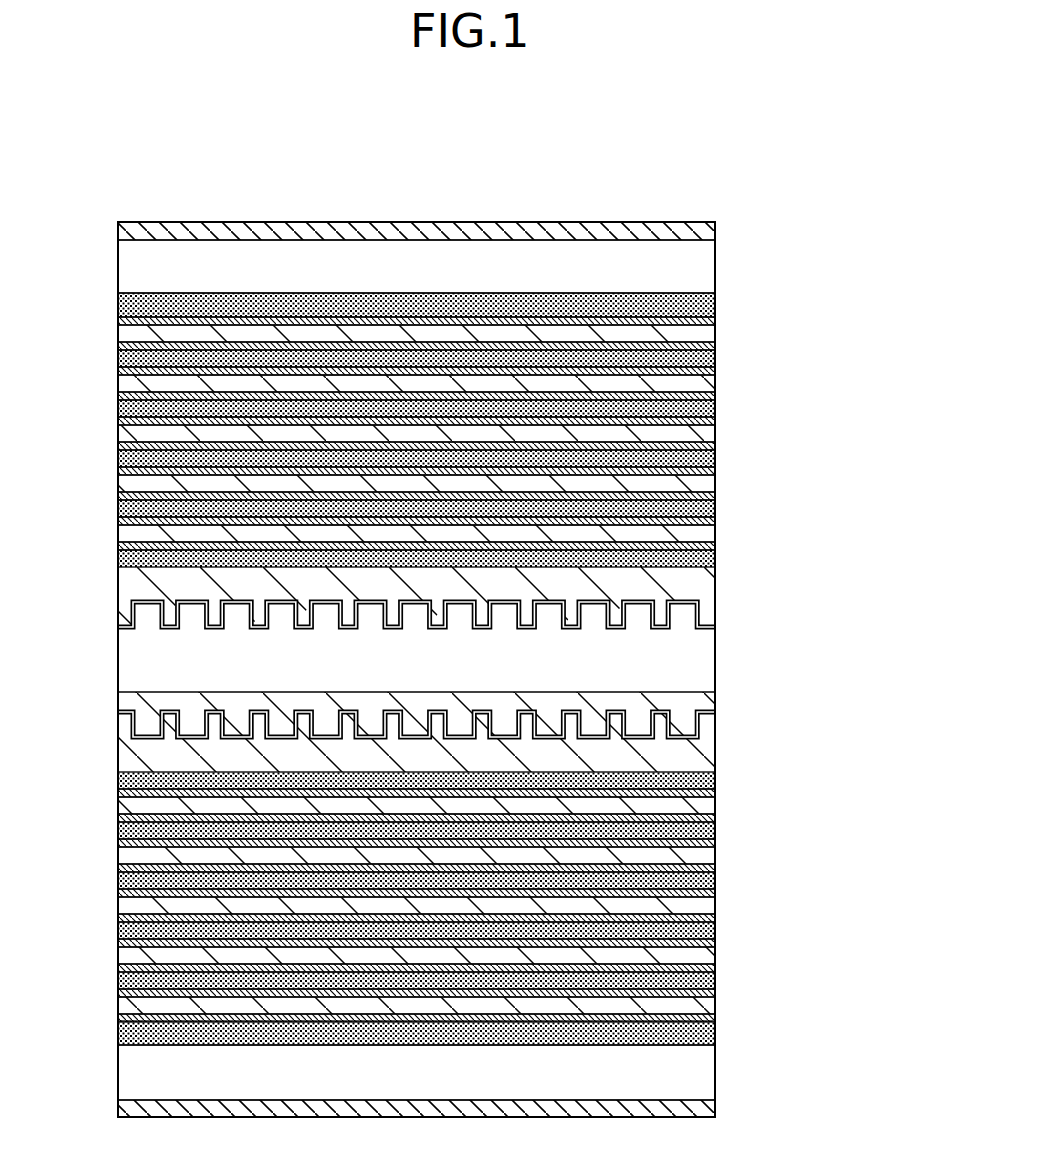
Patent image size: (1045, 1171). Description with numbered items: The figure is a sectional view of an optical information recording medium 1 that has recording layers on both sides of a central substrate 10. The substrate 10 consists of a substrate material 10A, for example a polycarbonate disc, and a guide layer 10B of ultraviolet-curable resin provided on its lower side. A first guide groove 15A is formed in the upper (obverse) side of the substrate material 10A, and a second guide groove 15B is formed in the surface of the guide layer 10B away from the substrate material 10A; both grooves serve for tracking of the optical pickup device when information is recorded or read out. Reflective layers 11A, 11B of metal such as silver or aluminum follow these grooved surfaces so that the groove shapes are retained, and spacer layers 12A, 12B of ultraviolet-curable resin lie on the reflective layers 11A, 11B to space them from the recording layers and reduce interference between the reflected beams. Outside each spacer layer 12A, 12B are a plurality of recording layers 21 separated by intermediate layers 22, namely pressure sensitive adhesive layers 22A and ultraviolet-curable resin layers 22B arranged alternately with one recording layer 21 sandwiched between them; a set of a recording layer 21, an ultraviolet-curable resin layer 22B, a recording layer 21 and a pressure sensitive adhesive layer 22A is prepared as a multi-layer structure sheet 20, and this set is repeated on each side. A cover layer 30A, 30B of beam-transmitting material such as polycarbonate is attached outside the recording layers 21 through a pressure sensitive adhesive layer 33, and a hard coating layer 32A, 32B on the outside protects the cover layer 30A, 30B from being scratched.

The optical information recording medium 1 is at (593, 176).
The substrate 10 is at (486, 652).
The substrate material 10A is at (697, 657).
The guide layer 10B is at (716, 702).
The reflective layer 11A is at (715, 625).
The reflective layer 11B is at (716, 713).
The spacer layer 12A is at (705, 585).
The spacer layer 12B is at (705, 755).
The first guide groove 15A is at (215, 624).
The second guide groove 15B is at (215, 715).
The multi-layer structure sheet 20 is at (518, 669).
The recording layer 21 is at (718, 470).
The intermediate layer 22 is at (491, 671).
The pressure sensitive adhesive layer 22A is at (718, 512).
The ultraviolet-curable resin layer 22B is at (718, 485).
The cover layer 30A is at (703, 263).
The cover layer 30B is at (703, 1073).
The hard coating layer 32A is at (703, 228).
The hard coating layer 32B is at (705, 1107).
The pressure sensitive adhesive layer 33 is at (703, 305).